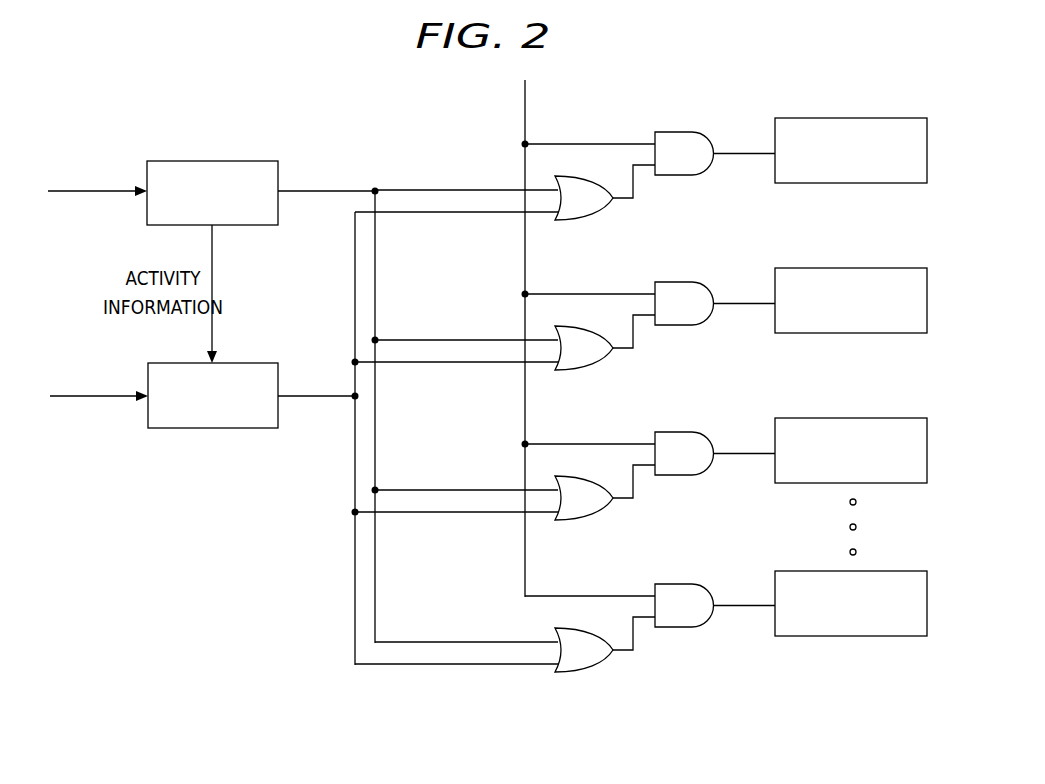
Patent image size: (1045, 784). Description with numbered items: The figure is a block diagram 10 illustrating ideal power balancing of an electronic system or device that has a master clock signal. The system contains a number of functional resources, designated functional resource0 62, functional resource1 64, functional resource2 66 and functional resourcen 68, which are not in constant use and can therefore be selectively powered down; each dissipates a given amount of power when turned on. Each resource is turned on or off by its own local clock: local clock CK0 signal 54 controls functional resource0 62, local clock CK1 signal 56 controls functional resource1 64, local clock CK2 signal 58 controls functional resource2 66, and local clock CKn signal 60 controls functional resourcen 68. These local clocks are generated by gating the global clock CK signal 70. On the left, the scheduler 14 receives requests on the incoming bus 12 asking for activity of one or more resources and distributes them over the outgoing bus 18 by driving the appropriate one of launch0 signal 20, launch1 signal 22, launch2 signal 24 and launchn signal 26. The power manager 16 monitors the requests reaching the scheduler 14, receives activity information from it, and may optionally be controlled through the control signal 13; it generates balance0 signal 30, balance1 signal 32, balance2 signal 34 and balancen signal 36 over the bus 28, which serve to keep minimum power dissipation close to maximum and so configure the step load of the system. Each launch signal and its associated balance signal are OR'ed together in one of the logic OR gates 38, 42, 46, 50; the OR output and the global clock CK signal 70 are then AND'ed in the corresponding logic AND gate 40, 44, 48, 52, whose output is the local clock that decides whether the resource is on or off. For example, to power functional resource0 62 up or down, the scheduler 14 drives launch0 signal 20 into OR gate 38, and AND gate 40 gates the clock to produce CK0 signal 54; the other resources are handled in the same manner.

The block diagram 10 is at (330, 114).
The incoming bus 12 is at (92, 194).
The control signal 13 is at (92, 399).
The scheduler 14 is at (212, 161).
The power manager 16 is at (214, 428).
The outgoing bus 18 is at (309, 194).
The launch0 signal 20 is at (405, 188).
The launch1 signal 22 is at (405, 338).
The launch2 signal 24 is at (405, 488).
The launchn signal 26 is at (405, 640).
The bus 28 is at (309, 399).
The balance0 signal 30 is at (403, 214).
The balance1 signal 32 is at (403, 364).
The balance2 signal 34 is at (403, 514).
The balancen signal 36 is at (403, 666).
The logic OR gate 38 is at (590, 219).
The logic AND gate 40 is at (683, 132).
The logic OR gate 42 is at (590, 369).
The logic AND gate 44 is at (683, 282).
The logic OR gate 46 is at (590, 519).
The logic AND gate 48 is at (683, 432).
The logic OR gate 50 is at (590, 671).
The logic AND gate 52 is at (683, 584).
The local clock CK0 signal 54 is at (737, 154).
The local clock CK1 signal 56 is at (737, 304).
The local clock CK2 signal 58 is at (737, 454).
The local clock CKn signal 60 is at (737, 606).
The functional resource0 62 is at (848, 118).
The functional resource1 64 is at (848, 268).
The functional resource2 66 is at (848, 418).
The functional resourcen 68 is at (855, 636).
The global clock CK signal 70 is at (525, 120).